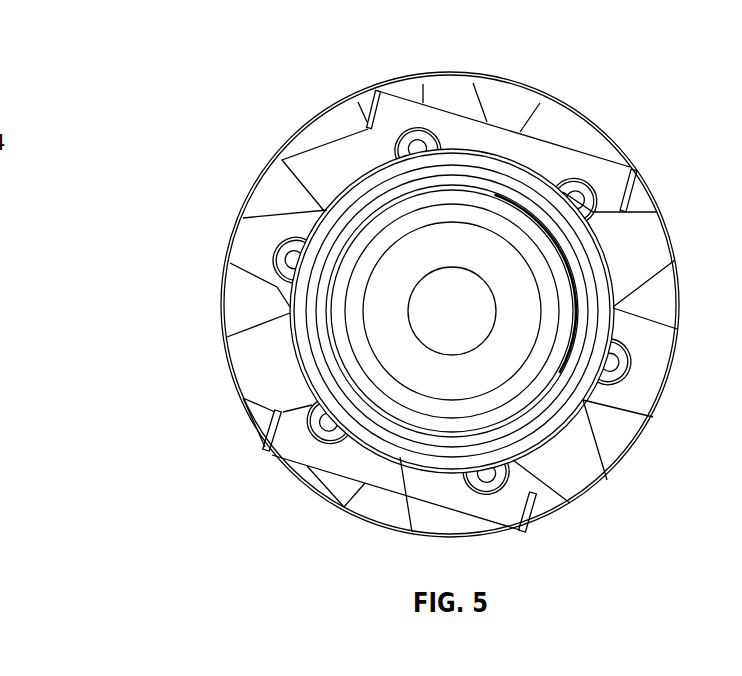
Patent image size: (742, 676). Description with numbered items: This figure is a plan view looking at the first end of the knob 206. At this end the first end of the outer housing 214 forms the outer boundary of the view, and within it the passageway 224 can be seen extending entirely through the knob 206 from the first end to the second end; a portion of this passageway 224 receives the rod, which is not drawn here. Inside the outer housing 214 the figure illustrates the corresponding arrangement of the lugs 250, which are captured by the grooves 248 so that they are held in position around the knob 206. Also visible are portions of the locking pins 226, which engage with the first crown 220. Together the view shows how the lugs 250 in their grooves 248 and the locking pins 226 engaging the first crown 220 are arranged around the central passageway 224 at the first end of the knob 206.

The knob 206 is at (314, 66).
The outer housing 214 is at (507, 103).
The first crown 220 is at (378, 192).
The passageway 224 is at (525, 310).
The locking pins 226 is at (473, 482).
The grooves 248 is at (290, 302).
The lugs 250 is at (290, 252).